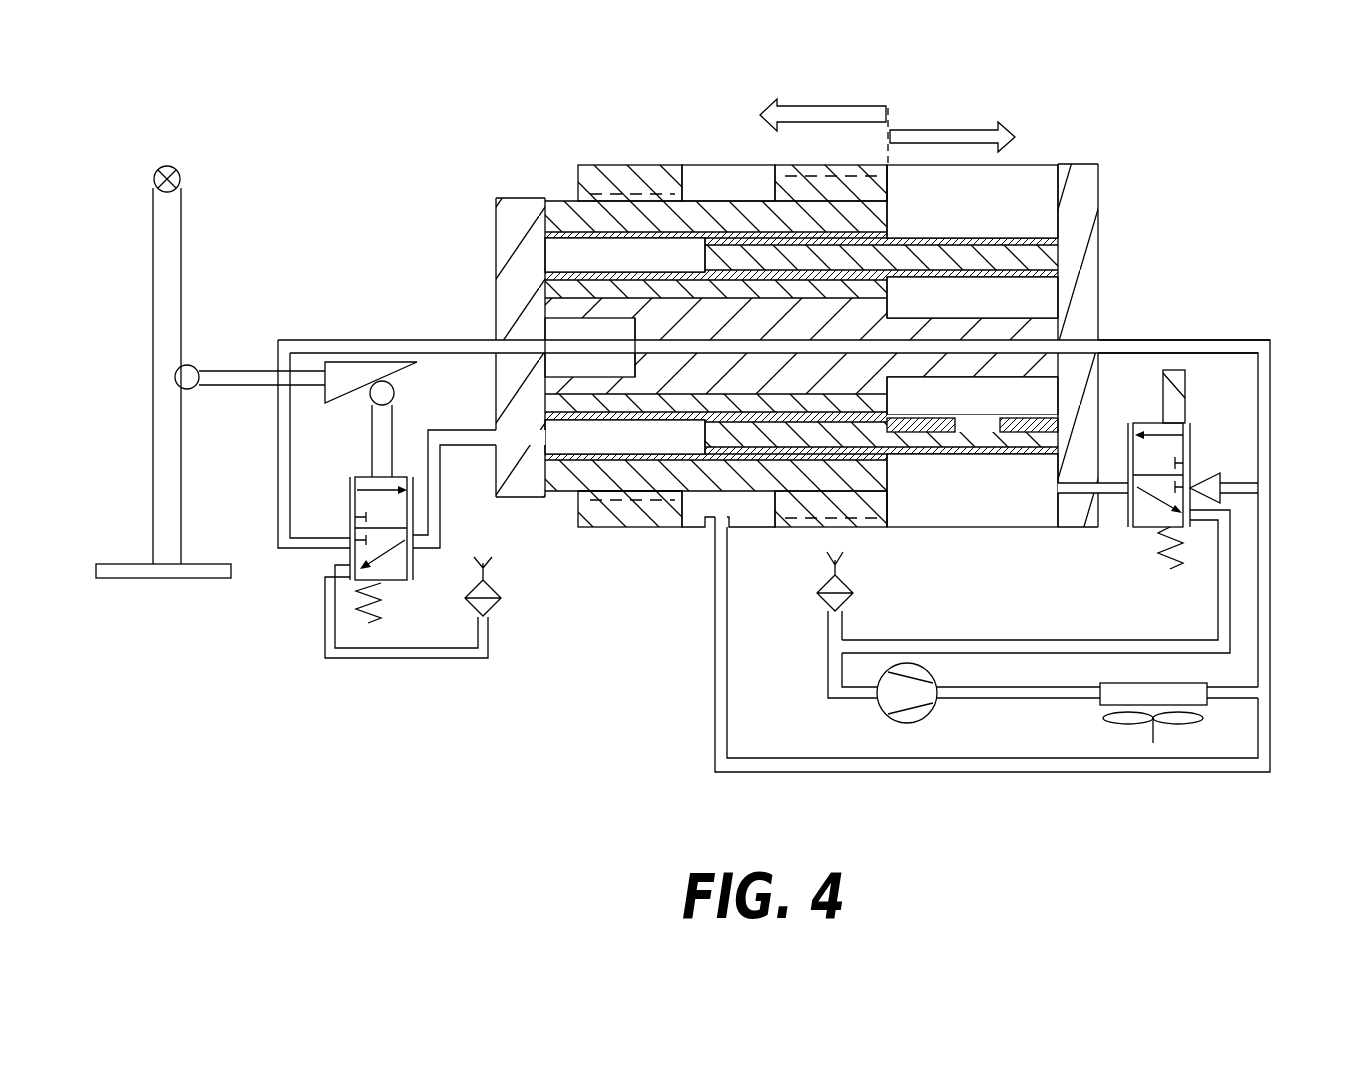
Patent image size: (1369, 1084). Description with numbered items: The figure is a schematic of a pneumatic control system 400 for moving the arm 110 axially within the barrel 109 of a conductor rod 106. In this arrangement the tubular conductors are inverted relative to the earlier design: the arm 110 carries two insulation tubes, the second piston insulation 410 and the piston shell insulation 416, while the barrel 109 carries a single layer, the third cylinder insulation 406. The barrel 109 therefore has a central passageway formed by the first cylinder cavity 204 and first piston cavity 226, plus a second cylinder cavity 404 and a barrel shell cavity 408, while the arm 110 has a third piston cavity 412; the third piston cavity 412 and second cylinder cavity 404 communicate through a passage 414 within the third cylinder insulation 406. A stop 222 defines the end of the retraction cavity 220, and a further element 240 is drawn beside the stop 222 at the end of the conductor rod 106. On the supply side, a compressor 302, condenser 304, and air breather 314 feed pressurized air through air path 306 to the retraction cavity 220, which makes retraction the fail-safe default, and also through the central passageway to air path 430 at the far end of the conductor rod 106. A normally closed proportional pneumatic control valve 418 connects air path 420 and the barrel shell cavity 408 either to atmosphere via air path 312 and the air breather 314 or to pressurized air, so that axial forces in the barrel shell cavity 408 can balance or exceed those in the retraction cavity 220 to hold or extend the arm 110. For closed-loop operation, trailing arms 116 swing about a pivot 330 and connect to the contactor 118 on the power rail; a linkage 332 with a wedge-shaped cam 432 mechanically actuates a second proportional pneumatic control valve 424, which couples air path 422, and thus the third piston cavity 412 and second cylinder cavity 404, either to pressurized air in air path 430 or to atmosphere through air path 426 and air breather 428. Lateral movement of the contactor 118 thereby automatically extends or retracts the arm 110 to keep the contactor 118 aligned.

The pneumatic control system 400 is at (561, 818).
The conductor rod 106 is at (774, 347).
The barrel 109 is at (974, 508).
The arm 110 is at (774, 345).
The trailing arms 116 is at (182, 233).
The contactor 118 is at (126, 579).
The first cylinder cavity 204 is at (986, 356).
The retraction cavity 220 is at (716, 166).
The stop 222 is at (626, 166).
The first piston cavity 226 is at (604, 358).
The seal 240 is at (780, 166).
The compressor 302 is at (907, 720).
The condenser 304 is at (1112, 687).
The air path 306 is at (1240, 338).
The air path 312 is at (1220, 592).
The air breather 314 is at (827, 600).
The pivot 330 is at (168, 166).
The linkage 332 is at (213, 370).
The second cylinder cavity 404 is at (986, 306).
The third cylinder insulation 406 is at (1010, 257).
The barrel shell cavity 408 is at (986, 213).
The second piston insulation 410 is at (575, 405).
The third piston cavity 412 is at (633, 265).
The passage 414 is at (988, 418).
The piston shell insulation 416 is at (630, 481).
The pneumatic control valve 418 is at (1186, 472).
The air path 420 is at (1108, 494).
The air path 422 is at (437, 500).
The pneumatic control valve 424 is at (350, 478).
The air path 426 is at (417, 660).
The air breather 428 is at (492, 618).
The air path 430 is at (438, 340).
The wedge-shaped cam 432 is at (350, 361).